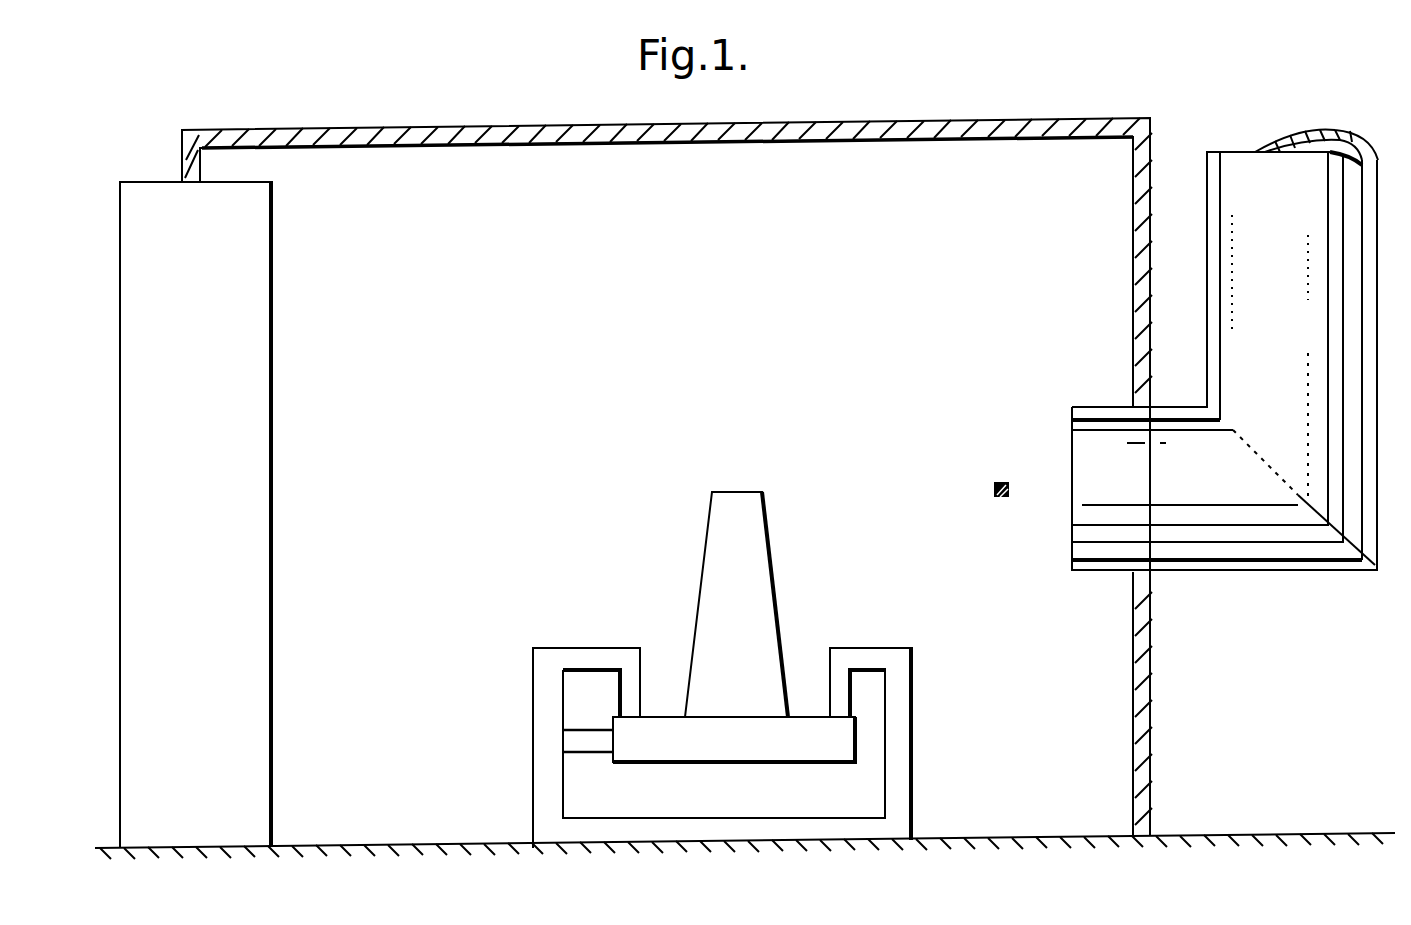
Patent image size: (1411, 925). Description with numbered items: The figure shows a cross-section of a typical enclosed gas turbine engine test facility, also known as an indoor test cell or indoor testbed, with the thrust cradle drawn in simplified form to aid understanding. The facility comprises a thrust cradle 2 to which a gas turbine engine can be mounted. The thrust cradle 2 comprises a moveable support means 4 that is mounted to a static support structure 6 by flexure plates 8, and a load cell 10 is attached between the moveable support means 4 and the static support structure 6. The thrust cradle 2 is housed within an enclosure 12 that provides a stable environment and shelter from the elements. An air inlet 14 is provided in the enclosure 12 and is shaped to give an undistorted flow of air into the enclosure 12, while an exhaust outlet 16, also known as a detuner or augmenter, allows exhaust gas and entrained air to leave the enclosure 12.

The thrust cradle 2 is at (683, 670).
The moveable support means 4 is at (752, 532).
The static support structure 6 is at (543, 748).
The flexure plates 8 is at (632, 660).
The load cell 10 is at (588, 738).
The enclosure 12 is at (550, 131).
The air inlet 14 is at (196, 315).
The exhaust outlet 16 is at (1110, 412).